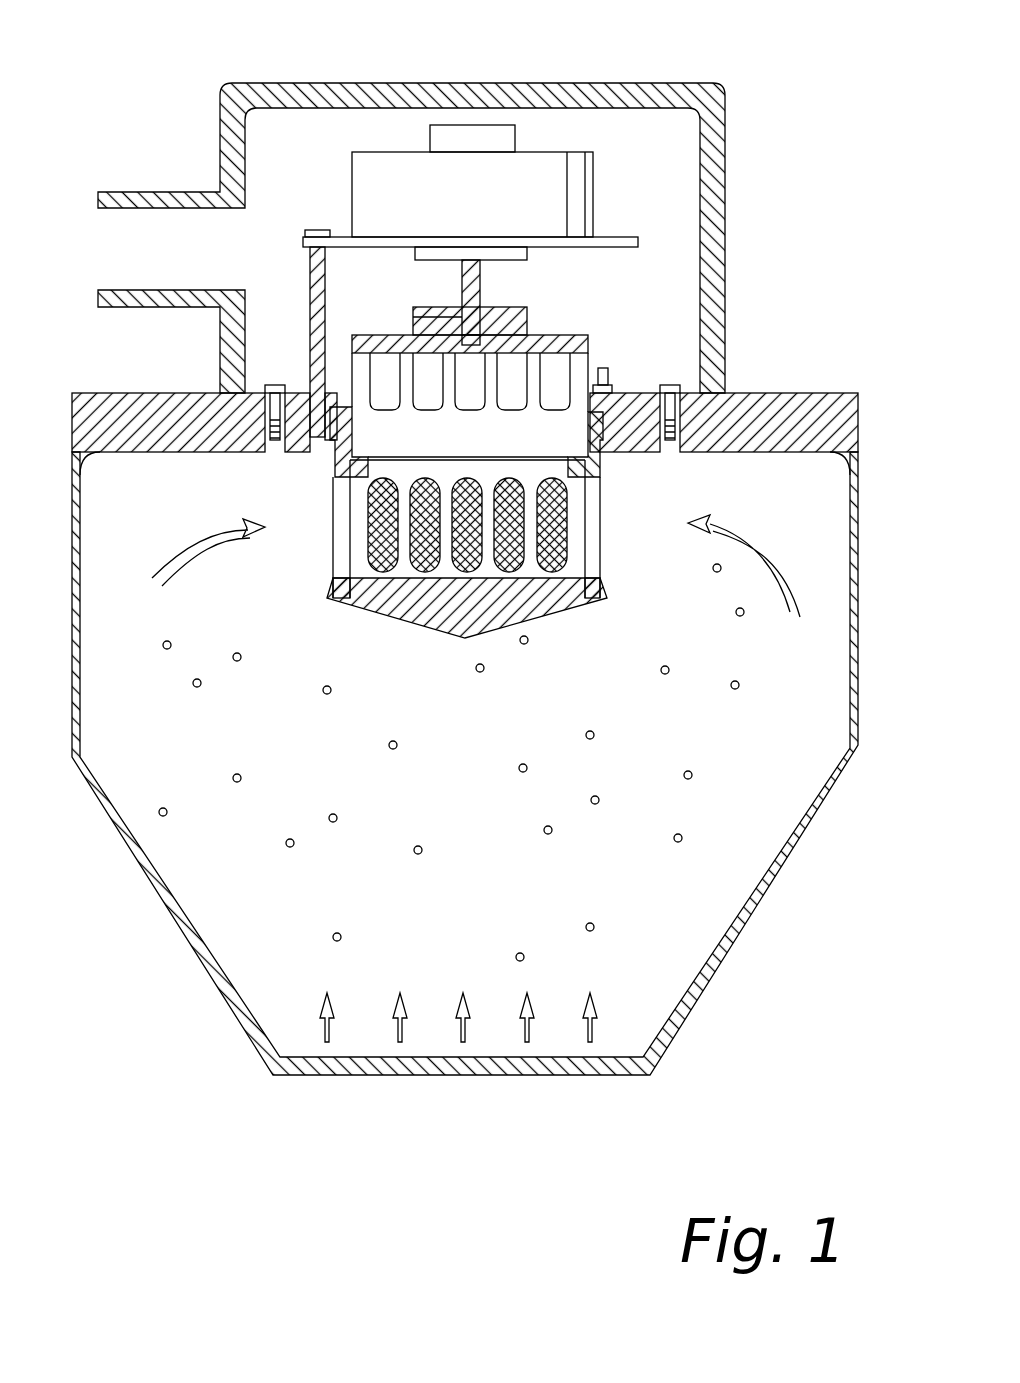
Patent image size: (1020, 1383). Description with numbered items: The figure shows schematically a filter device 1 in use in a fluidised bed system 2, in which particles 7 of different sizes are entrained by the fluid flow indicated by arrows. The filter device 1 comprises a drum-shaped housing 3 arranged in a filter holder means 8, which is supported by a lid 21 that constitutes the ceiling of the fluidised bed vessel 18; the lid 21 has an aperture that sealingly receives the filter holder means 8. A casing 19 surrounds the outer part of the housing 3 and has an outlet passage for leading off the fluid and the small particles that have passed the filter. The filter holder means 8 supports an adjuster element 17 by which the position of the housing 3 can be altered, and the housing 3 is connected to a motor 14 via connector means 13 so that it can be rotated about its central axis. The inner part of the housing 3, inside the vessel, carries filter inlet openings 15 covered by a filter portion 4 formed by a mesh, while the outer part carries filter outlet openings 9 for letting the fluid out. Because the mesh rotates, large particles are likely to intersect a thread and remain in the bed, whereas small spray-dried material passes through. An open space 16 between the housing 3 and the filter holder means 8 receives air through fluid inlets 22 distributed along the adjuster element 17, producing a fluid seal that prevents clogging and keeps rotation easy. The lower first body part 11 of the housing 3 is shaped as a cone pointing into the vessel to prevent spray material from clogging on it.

The filter device 1 is at (509, 537).
The fluidised bed system 2 is at (509, 763).
The housing 3 is at (498, 362).
The filter portion 4 is at (503, 529).
The particles 7 is at (745, 614).
The filter holder means 8 is at (627, 450).
The filter outlet openings 9 is at (410, 378).
The first body part 11 is at (442, 607).
The connector means 13 is at (480, 290).
The motor 14 is at (568, 197).
The filter inlet openings 15 is at (563, 517).
The open space 16 is at (330, 447).
The adjuster element 17 is at (635, 393).
The fluidised bed vessel 18 is at (855, 505).
The casing 19 is at (633, 95).
The lid 21 is at (793, 410).
The fluid inlets 22 is at (607, 372).